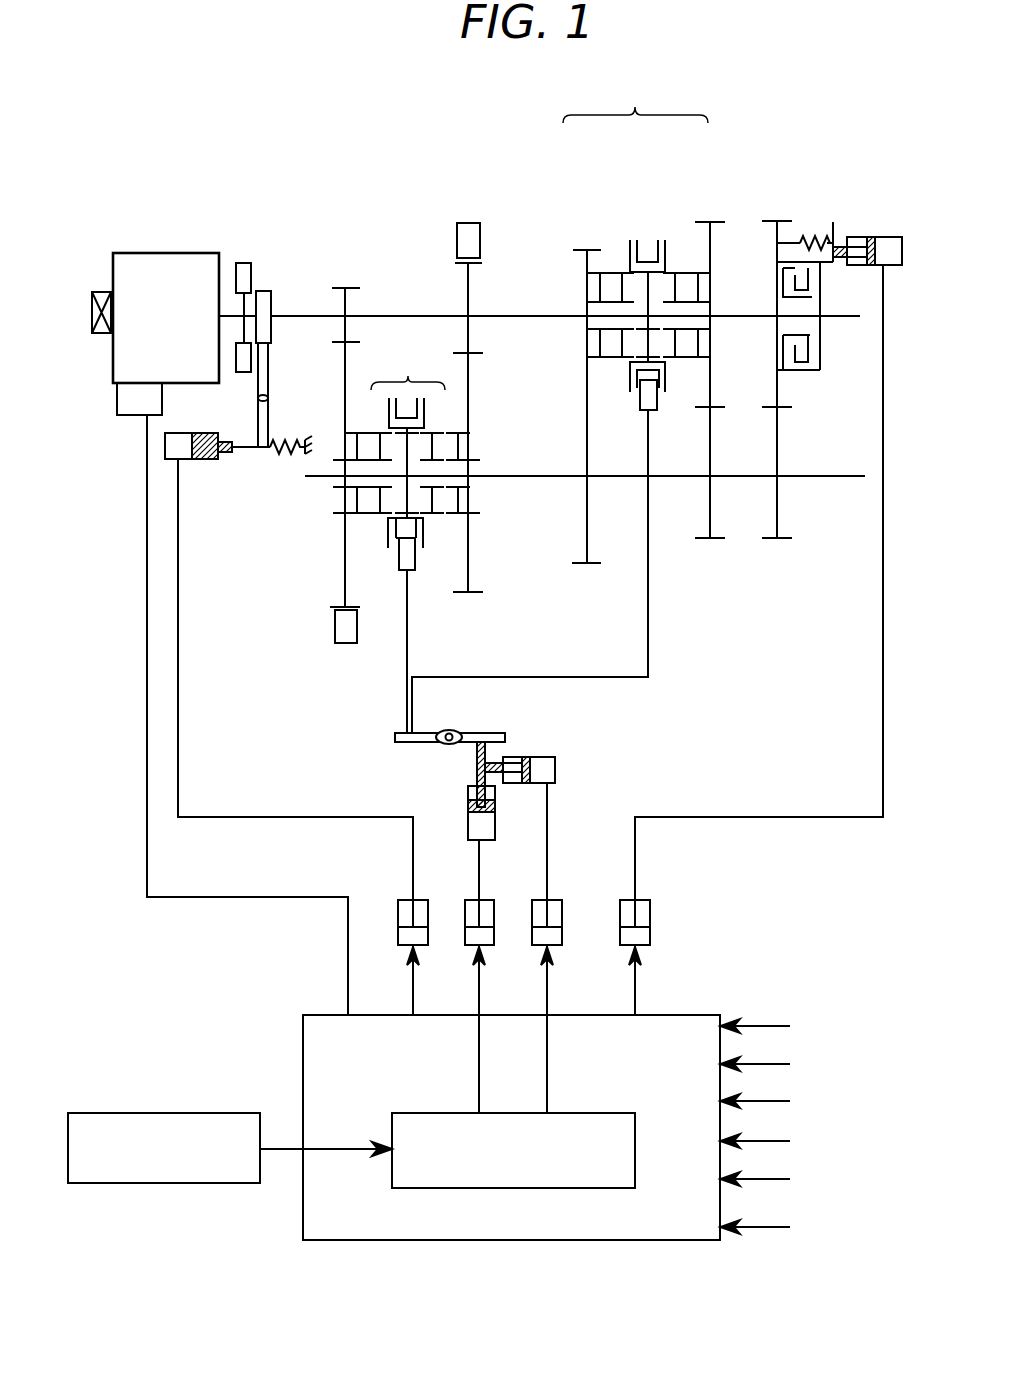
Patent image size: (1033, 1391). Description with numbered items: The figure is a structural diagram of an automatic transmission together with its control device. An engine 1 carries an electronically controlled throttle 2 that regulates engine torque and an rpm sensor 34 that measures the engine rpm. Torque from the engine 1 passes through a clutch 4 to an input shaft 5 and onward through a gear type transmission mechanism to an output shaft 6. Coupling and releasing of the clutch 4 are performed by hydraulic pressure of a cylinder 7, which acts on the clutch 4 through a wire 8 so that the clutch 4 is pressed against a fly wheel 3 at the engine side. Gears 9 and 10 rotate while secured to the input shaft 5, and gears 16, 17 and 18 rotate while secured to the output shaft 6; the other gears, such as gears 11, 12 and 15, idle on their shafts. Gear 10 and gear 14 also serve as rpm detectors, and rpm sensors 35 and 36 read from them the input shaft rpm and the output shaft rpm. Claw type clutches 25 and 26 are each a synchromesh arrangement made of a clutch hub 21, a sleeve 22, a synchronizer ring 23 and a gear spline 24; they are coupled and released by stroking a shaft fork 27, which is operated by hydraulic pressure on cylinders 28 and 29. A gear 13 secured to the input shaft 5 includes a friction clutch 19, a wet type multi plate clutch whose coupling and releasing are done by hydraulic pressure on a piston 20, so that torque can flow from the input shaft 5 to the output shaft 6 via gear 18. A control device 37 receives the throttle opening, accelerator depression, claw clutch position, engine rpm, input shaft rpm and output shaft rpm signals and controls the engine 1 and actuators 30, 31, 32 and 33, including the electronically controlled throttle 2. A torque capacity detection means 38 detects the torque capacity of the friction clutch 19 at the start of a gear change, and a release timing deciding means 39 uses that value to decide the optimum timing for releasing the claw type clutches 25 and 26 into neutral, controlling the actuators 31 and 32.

The engine 1 is at (159, 253).
The electronically controlled throttle 2 is at (140, 415).
The fly wheel 3 is at (243, 263).
The clutch 4 is at (267, 291).
The input shaft 5 is at (384, 316).
The output shaft 6 is at (814, 476).
The cylinder 7 is at (190, 460).
The wire 8 is at (248, 452).
The gear 9 is at (343, 288).
The gear 10 is at (458, 282).
The input gear 11 is at (587, 250).
The input gear 12 is at (710, 222).
The gear 13 is at (779, 221).
The gear 14 is at (342, 600).
The output gear 15 is at (468, 592).
The gear 16 is at (586, 563).
The gear 17 is at (711, 538).
The gear 18 is at (774, 538).
The friction clutch 19 is at (802, 370).
The piston 20 is at (885, 237).
The clutch hub 21 is at (620, 272).
The sleeve 22 is at (648, 240).
The synchronizer ring 23 is at (675, 273).
The gear spline 24 is at (698, 273).
The claw type clutch 25 is at (561, 405).
The claw type clutch 26 is at (406, 461).
The shaft fork 27 is at (470, 733).
The cylinder 28 is at (555, 770).
The cylinder 29 is at (468, 800).
The actuator 30 is at (398, 914).
The actuator 31 is at (465, 914).
The actuator 32 is at (562, 920).
The actuator 33 is at (650, 922).
The rpm sensor 34 is at (100, 292).
The rpm sensor 35 is at (468, 223).
The rpm sensor 36 is at (340, 643).
The control device 37 is at (695, 1016).
The torque capacity detection means 38 is at (188, 1113).
The release timing deciding means 39 is at (635, 1140).